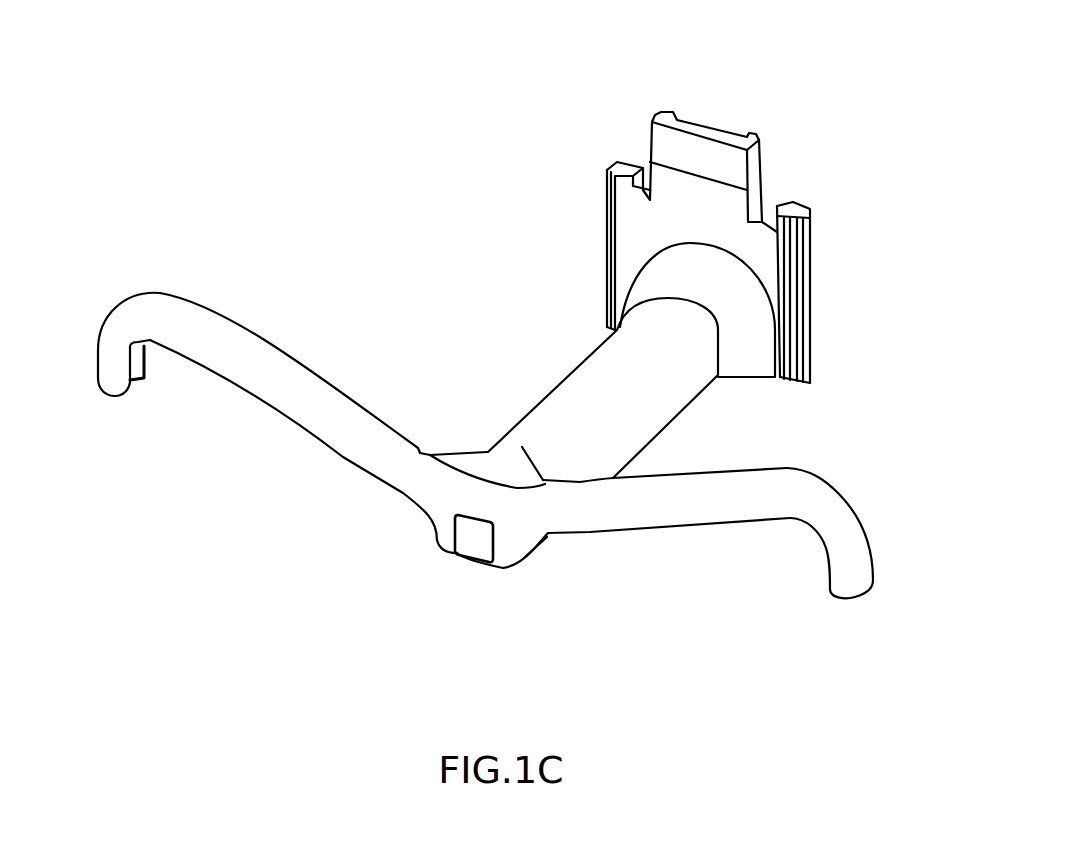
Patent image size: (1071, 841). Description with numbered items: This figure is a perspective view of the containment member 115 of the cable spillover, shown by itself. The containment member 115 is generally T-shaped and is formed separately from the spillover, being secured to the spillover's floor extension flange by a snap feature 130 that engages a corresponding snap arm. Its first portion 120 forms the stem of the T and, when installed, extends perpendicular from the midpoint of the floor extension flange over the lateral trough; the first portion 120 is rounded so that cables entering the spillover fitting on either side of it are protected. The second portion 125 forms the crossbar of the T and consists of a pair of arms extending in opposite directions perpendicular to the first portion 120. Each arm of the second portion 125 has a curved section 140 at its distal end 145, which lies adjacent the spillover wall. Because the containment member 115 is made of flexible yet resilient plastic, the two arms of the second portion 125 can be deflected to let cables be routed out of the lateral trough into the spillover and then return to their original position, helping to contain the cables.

The containment member 115 is at (471, 564).
The first portion 120 is at (593, 367).
The second portion 125 is at (350, 460).
The snap feature 130 is at (675, 145).
The curved section 140 is at (152, 343).
The distal end 145 is at (106, 396).